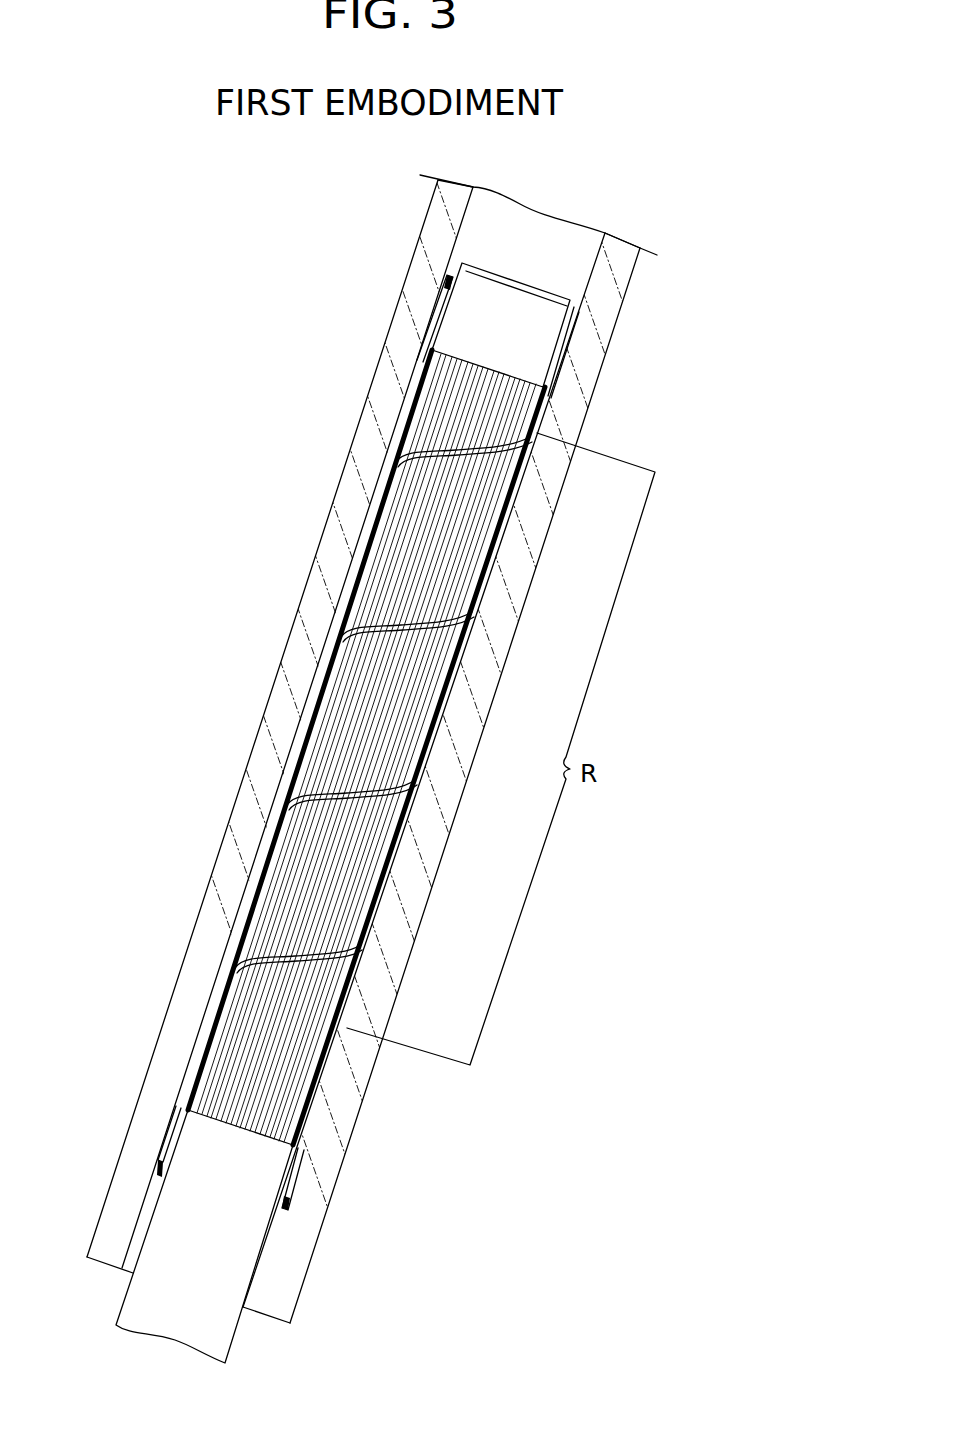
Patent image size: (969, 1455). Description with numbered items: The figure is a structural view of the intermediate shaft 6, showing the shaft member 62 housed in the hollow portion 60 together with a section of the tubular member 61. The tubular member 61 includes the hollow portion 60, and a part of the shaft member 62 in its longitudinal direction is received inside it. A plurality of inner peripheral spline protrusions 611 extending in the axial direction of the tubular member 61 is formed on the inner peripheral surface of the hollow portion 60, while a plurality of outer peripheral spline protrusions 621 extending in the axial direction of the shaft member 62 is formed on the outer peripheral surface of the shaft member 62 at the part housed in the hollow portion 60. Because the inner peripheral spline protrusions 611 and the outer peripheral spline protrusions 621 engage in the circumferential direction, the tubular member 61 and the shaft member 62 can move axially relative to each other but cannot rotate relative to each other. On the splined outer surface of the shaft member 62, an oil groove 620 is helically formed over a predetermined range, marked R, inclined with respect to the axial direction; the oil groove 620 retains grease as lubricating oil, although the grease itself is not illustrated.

The intermediate shaft 6 is at (484, 750).
The hollow portion 60 is at (484, 750).
The tubular member 61 is at (325, 520).
The inner peripheral spline protrusions 611 is at (433, 303).
The shaft member 62 is at (404, 794).
The oil groove 620 is at (415, 450).
The outer peripheral spline protrusions 621 is at (335, 710).